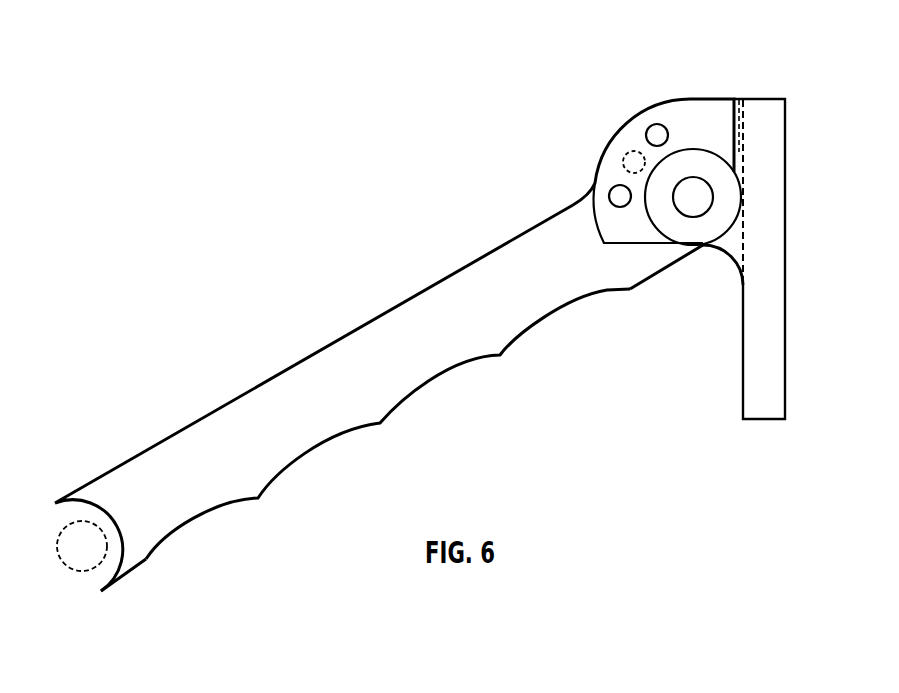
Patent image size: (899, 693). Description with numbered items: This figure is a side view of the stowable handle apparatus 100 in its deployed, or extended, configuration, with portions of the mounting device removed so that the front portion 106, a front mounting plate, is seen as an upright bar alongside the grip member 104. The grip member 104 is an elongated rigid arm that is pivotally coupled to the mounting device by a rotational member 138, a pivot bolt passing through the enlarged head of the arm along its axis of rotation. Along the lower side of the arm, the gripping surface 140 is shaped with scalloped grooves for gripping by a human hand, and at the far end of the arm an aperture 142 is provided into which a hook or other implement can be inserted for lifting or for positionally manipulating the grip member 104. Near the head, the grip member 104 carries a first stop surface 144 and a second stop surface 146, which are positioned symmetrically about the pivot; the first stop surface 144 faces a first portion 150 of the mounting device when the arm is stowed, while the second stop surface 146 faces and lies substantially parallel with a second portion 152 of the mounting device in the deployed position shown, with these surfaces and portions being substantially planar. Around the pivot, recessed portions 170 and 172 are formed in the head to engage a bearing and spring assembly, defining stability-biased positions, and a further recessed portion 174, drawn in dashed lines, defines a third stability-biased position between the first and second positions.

The handle apparatus 100 is at (284, 179).
The grip member 104 is at (352, 348).
The front portion 106 is at (746, 320).
The rotational member 138 is at (690, 192).
The gripping surface 140 is at (410, 429).
The aperture 142 is at (107, 555).
The first stop surface 144 is at (662, 268).
The second stop surface 146 is at (738, 147).
The first portion 150 is at (743, 297).
The second portion 152 is at (745, 120).
The recessed portion 170 is at (605, 180).
The recessed portion 172 is at (646, 124).
The recessed portion 174 is at (622, 155).